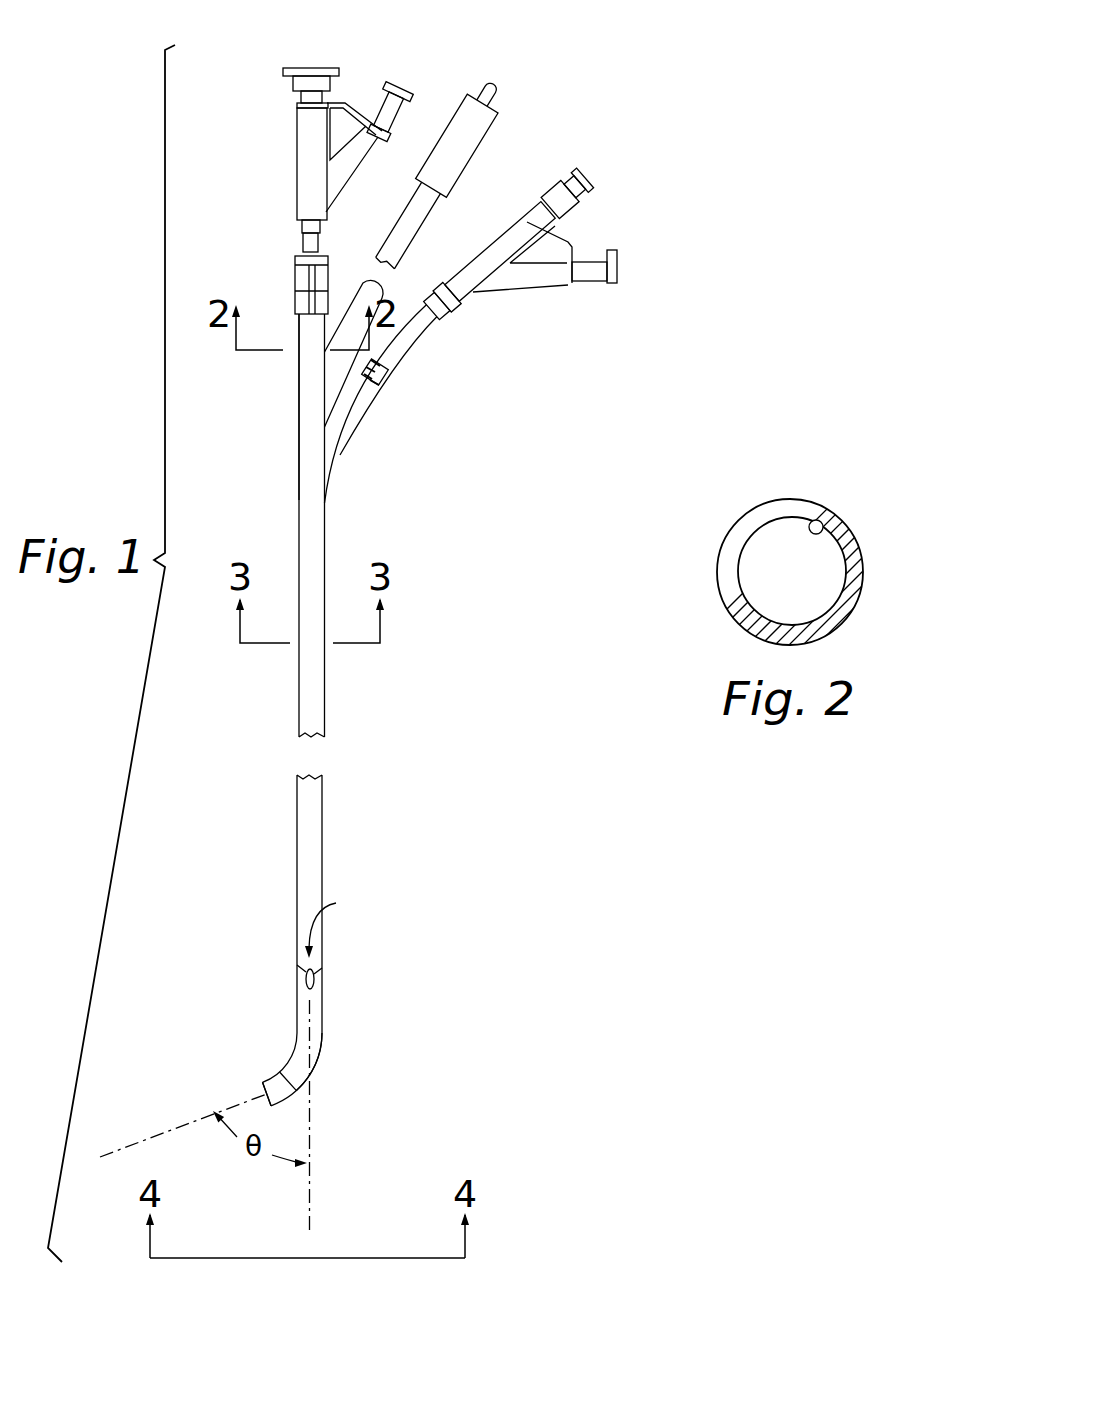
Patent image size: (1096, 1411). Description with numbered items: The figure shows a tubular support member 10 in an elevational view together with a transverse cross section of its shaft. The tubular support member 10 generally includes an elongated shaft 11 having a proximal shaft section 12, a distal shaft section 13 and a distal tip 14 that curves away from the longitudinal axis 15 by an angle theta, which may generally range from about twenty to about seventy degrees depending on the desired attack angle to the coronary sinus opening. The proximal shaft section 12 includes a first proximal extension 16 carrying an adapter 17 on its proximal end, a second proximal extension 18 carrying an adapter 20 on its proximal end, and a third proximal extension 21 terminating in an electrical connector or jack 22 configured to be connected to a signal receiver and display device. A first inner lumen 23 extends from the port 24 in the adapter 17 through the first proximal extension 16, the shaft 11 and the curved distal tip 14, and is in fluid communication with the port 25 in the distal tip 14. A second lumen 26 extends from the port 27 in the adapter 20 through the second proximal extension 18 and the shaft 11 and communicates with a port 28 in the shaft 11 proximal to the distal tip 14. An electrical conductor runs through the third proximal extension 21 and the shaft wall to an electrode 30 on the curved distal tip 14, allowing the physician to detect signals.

In FIG. 1, the tubular support member 10 is at (378, 527).
In FIG. 1, the elongated shaft 11 is at (282, 525).
In FIG. 1, the proximal shaft section 12 is at (299, 422).
In FIG. 1, the distal shaft section 13 is at (322, 860).
In FIG. 1, the distal tip 14 is at (315, 1073).
In FIG. 1, the longitudinal axis 15 is at (313, 1103).
In FIG. 1, the first proximal extension 16 is at (420, 342).
In FIG. 1, the adapter 17 is at (487, 270).
In FIG. 1, the second proximal extension 18 is at (295, 313).
In FIG. 2, the second proximal extension 18 is at (862, 580).
In FIG. 1, the adapter 20 is at (297, 165).
In FIG. 1, the third proximal extension 21 is at (405, 235).
In FIG. 1, the electrical connector or jack 22 is at (497, 95).
In FIG. 1, the first inner lumen 23 is at (381, 382).
In FIG. 1, the port 24 is at (590, 172).
In FIG. 1, the port 25 is at (262, 1086).
In FIG. 2, the second lumen 26 is at (825, 520).
In FIG. 1, the port 27 is at (313, 68).
In FIG. 1, the port 28 is at (318, 984).
In FIG. 1, the electrode 30 is at (275, 1060).